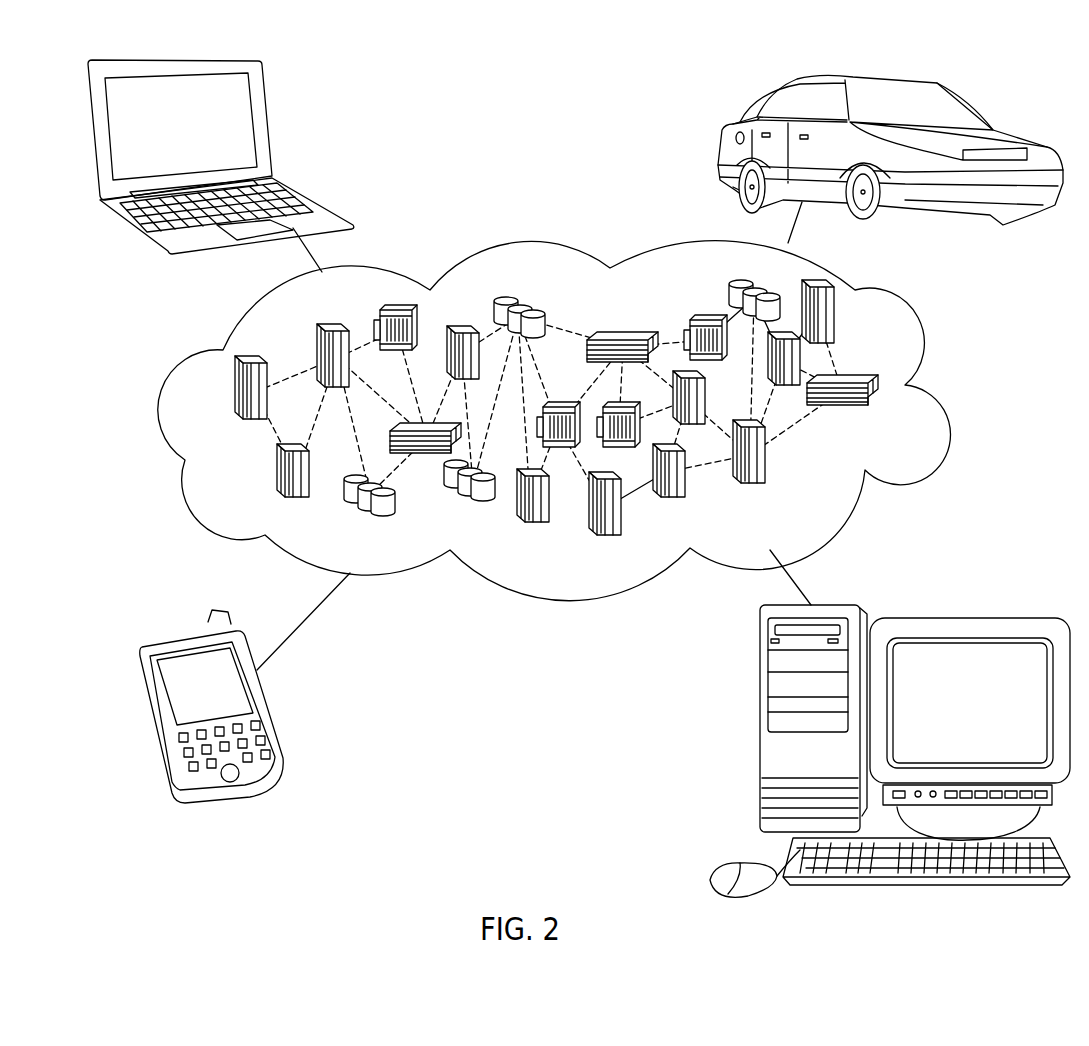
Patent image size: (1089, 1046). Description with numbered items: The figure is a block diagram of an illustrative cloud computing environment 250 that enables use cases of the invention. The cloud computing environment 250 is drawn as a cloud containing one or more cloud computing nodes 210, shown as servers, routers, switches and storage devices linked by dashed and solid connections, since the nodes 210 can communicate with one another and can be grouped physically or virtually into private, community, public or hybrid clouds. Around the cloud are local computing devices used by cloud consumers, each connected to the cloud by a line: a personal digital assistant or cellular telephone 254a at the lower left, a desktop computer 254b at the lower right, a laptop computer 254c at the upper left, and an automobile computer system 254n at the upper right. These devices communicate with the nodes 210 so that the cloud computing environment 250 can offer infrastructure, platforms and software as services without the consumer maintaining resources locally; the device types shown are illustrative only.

The cloud computing environment 250 is at (930, 327).
The cloud computing nodes 210 is at (898, 414).
The personal digital assistant or cellular telephone 254a is at (280, 732).
The desktop computer 254b is at (760, 722).
The laptop computer 254c is at (263, 117).
The automobile computer system 254n is at (730, 123).